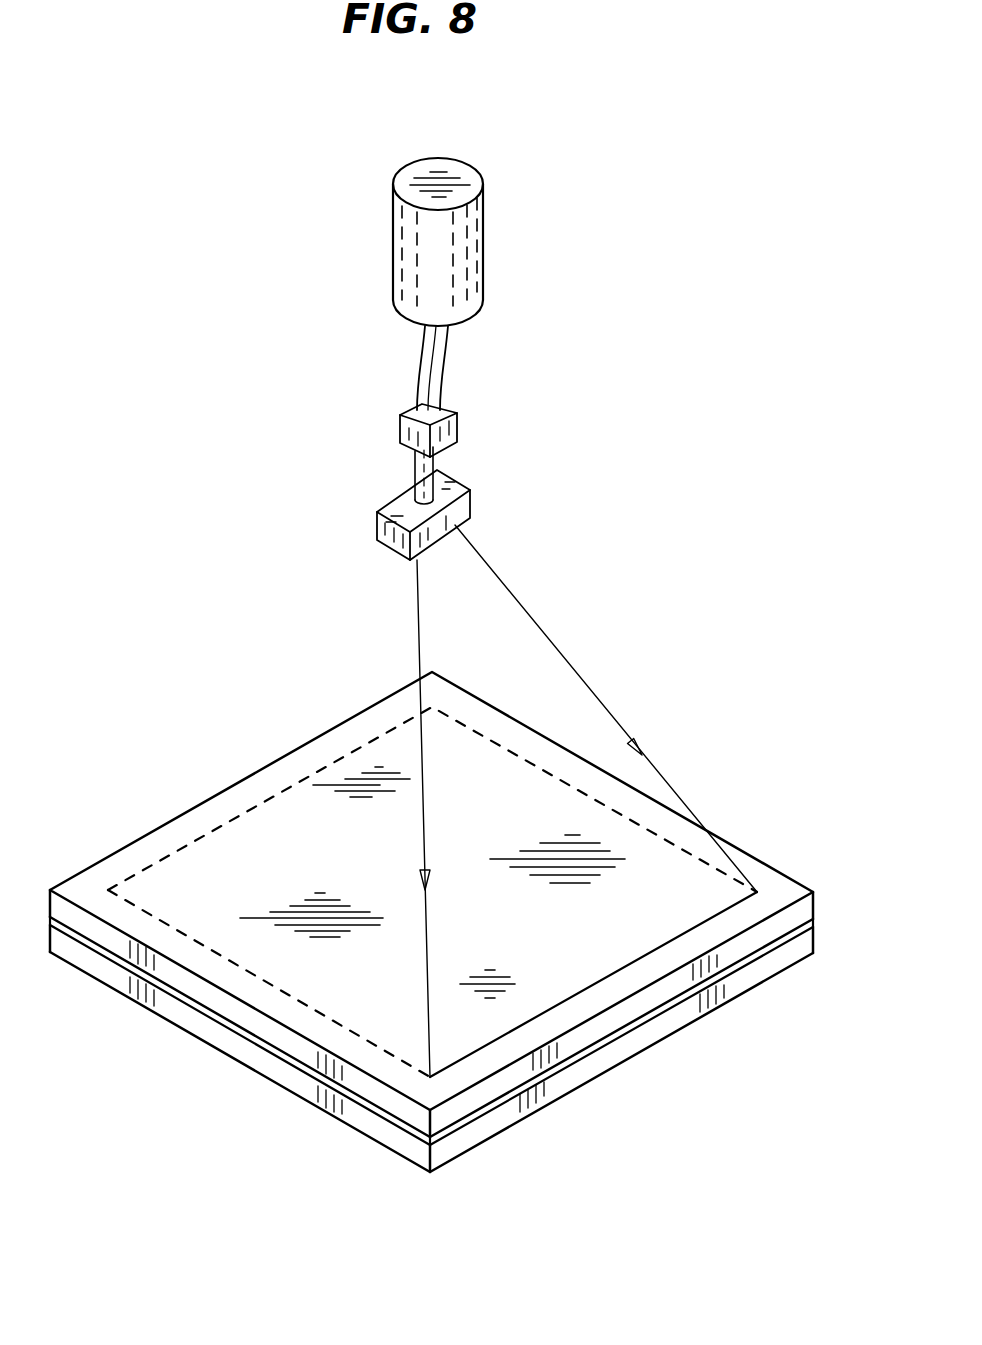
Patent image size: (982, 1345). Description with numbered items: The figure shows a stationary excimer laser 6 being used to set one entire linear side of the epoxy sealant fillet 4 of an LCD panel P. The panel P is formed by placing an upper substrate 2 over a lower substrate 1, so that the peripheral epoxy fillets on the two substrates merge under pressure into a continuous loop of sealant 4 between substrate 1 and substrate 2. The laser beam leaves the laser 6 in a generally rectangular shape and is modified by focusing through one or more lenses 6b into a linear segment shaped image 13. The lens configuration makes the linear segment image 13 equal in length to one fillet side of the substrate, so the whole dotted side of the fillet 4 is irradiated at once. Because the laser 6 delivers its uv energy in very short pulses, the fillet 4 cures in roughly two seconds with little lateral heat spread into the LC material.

The excimer laser 6 is at (465, 257).
The lens 6b is at (440, 438).
The substrate 2 is at (807, 908).
The fillet of epoxy sealant 4 is at (808, 920).
The substrate 1 is at (800, 947).
The linear segment shaped image 13 is at (558, 1004).
The LCD panel P is at (252, 746).